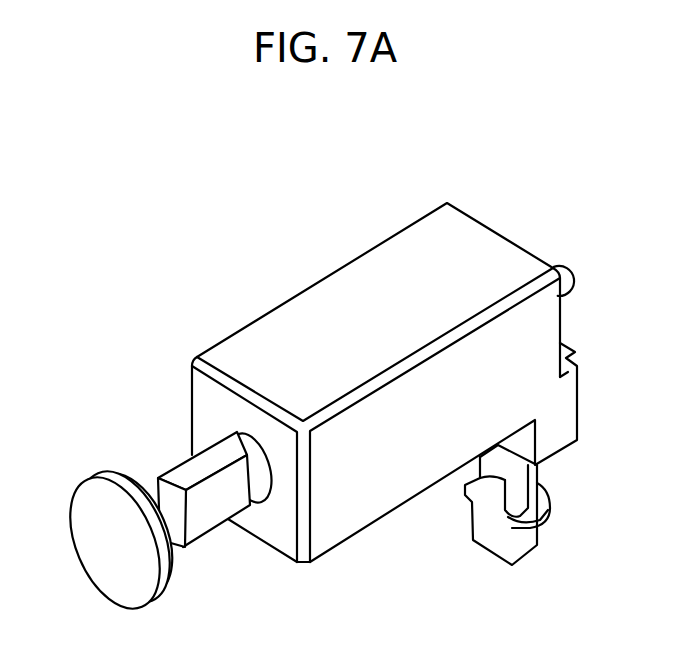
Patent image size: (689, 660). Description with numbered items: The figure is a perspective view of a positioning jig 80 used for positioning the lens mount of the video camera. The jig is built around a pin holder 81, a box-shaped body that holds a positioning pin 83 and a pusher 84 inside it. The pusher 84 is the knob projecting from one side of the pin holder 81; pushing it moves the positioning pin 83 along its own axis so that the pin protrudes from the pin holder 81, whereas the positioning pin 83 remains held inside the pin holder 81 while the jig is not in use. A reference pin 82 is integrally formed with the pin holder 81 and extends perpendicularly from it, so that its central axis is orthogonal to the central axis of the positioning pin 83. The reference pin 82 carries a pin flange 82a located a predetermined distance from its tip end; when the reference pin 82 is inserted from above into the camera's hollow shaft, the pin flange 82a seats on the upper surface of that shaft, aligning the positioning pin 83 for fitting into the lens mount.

The positioning jig 80 is at (206, 206).
The pin holder 81 is at (307, 307).
The reference pin 82 is at (490, 540).
The pin flange 82a is at (543, 506).
The positioning pin 83 is at (560, 262).
The pusher 84 is at (97, 500).